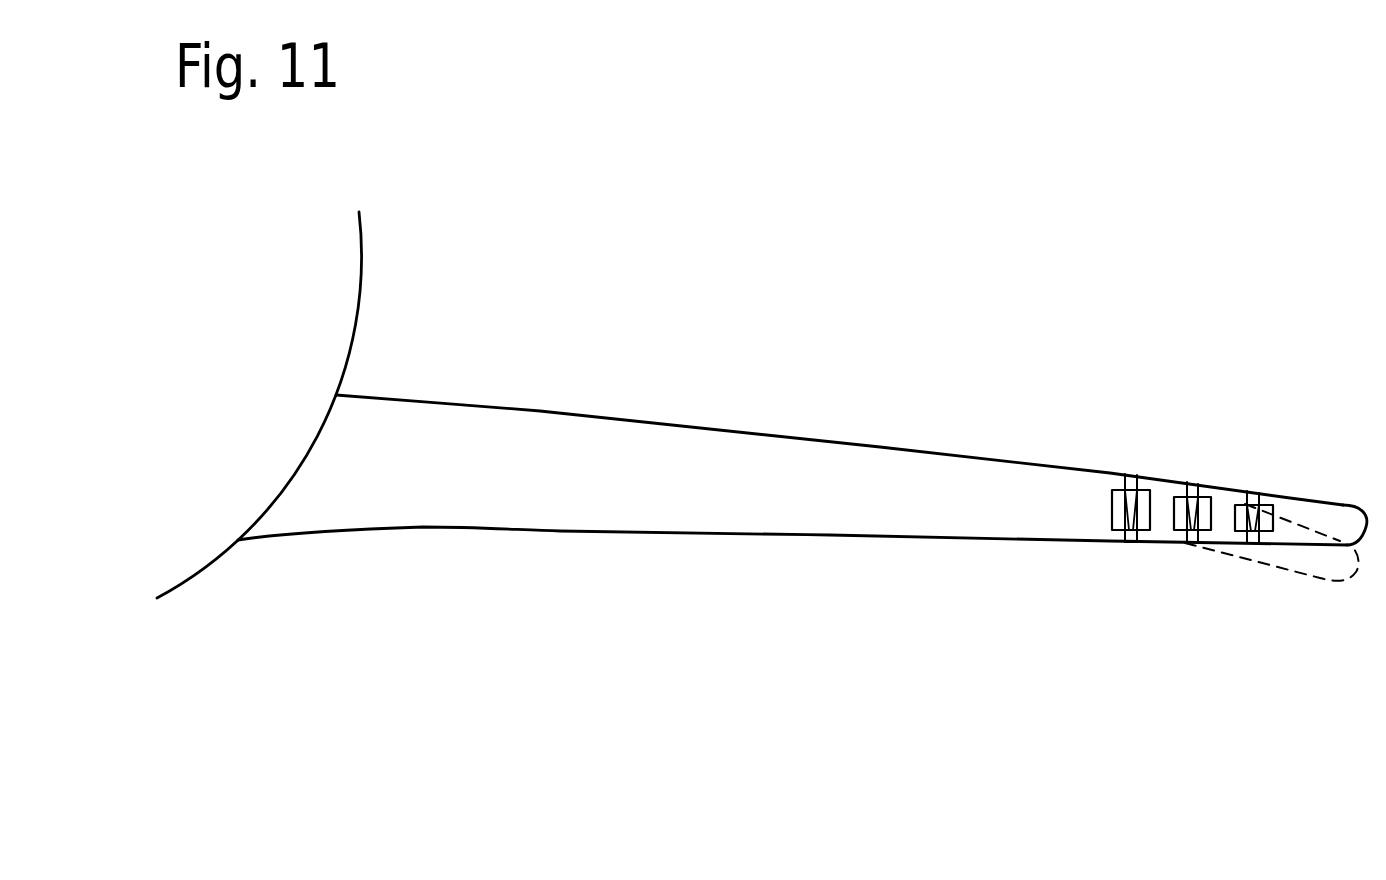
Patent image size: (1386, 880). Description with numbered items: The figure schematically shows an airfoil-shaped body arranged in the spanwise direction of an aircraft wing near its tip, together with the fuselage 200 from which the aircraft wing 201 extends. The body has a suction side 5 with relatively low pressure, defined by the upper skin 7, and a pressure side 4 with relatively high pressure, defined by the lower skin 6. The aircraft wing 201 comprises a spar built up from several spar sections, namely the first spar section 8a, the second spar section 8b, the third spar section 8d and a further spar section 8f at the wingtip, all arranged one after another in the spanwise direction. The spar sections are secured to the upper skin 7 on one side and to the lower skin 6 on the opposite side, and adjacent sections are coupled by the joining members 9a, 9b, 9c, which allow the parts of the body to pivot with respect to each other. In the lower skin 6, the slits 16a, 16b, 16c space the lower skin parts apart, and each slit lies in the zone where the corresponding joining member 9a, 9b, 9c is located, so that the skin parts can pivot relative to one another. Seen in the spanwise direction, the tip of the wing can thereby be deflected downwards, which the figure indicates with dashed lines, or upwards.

The fuselage 200 is at (200, 572).
The aircraft wing 201 is at (572, 411).
The upper skin 7 is at (847, 442).
The lower skin 6 is at (853, 533).
The suction side 5 is at (1027, 429).
The pressure side 4 is at (1027, 593).
The first spar section 8a is at (1076, 505).
The second spar section 8b is at (1162, 493).
The third spar section 8d is at (1225, 500).
The spar section 8f is at (1328, 513).
The joining member 9a is at (1140, 495).
The joining member 9b is at (1203, 500).
The joining member 9c is at (1270, 505).
The slit 16a is at (1132, 545).
The slit 16b is at (1193, 545).
The slit 16c is at (1258, 545).